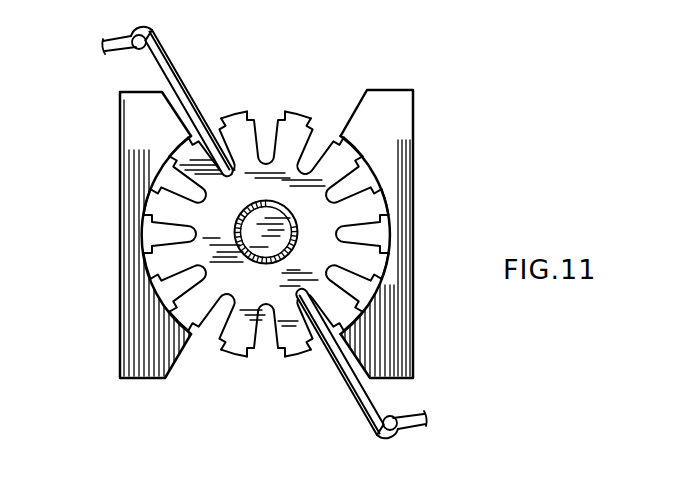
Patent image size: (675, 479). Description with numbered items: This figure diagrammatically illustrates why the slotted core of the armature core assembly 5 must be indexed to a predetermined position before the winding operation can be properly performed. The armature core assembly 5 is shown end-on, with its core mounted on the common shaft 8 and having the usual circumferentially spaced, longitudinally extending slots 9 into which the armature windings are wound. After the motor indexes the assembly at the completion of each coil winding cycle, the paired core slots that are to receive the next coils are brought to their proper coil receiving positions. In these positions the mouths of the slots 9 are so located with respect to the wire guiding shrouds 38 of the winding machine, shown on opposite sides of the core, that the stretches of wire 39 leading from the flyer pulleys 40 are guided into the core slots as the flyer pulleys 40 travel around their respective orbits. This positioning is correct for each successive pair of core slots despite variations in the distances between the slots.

The armature core assembly 5 is at (326, 95).
The slots 9 is at (266, 108).
The shaft 8 is at (298, 214).
The wire guiding shrouds 38 is at (393, 108).
The stretches of wire 39 is at (178, 75).
The flyer pulleys 40 is at (128, 52).